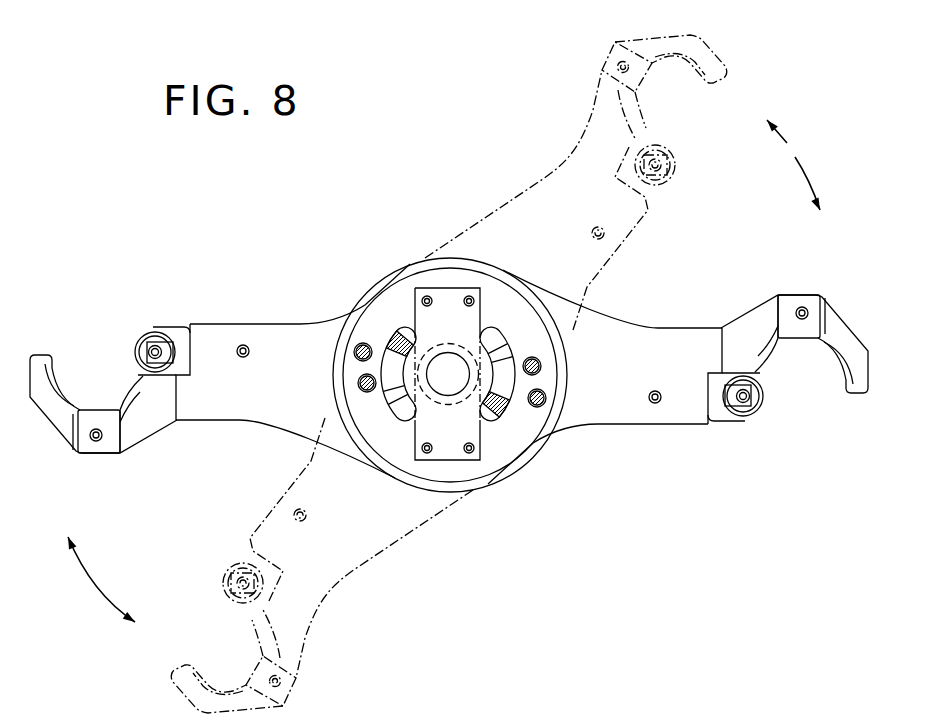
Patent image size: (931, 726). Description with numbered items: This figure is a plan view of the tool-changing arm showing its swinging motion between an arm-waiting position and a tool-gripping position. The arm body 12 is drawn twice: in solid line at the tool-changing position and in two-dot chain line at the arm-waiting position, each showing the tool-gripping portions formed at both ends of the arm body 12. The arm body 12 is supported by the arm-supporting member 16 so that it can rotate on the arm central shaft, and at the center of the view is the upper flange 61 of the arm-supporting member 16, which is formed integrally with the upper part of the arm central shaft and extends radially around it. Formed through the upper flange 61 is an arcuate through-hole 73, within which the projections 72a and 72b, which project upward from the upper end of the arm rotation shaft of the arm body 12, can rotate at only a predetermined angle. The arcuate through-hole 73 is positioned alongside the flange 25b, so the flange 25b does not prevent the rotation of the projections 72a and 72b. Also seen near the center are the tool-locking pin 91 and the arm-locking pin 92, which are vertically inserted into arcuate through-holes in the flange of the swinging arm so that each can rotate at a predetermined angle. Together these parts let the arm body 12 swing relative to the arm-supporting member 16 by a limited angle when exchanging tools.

The arm body 12 is at (594, 88).
The arm-supporting member 16 is at (391, 250).
The upper flange 61 is at (430, 272).
The flange 25b is at (458, 288).
The projection 72a is at (390, 337).
The projection 72b is at (505, 408).
The arcuate through-hole 73 is at (398, 330).
The tool-locking pin 91 is at (355, 346).
The arm-locking pin 92 is at (360, 388).